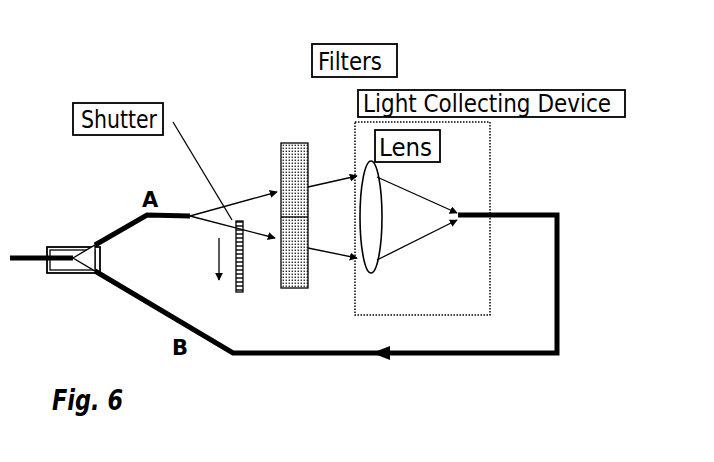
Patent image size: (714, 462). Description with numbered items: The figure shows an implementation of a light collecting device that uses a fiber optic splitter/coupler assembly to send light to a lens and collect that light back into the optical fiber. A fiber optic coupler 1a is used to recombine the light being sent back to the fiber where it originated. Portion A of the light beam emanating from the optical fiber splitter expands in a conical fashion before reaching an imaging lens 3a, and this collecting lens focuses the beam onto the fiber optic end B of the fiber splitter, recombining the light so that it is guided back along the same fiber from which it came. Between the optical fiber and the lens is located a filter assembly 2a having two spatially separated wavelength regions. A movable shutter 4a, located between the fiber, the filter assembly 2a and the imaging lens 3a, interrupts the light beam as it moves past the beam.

The fiber optic coupler 1a is at (66, 222).
The filter assembly 2a is at (290, 143).
The imaging lens 3a is at (422, 218).
The movable shutter 4a is at (229, 230).